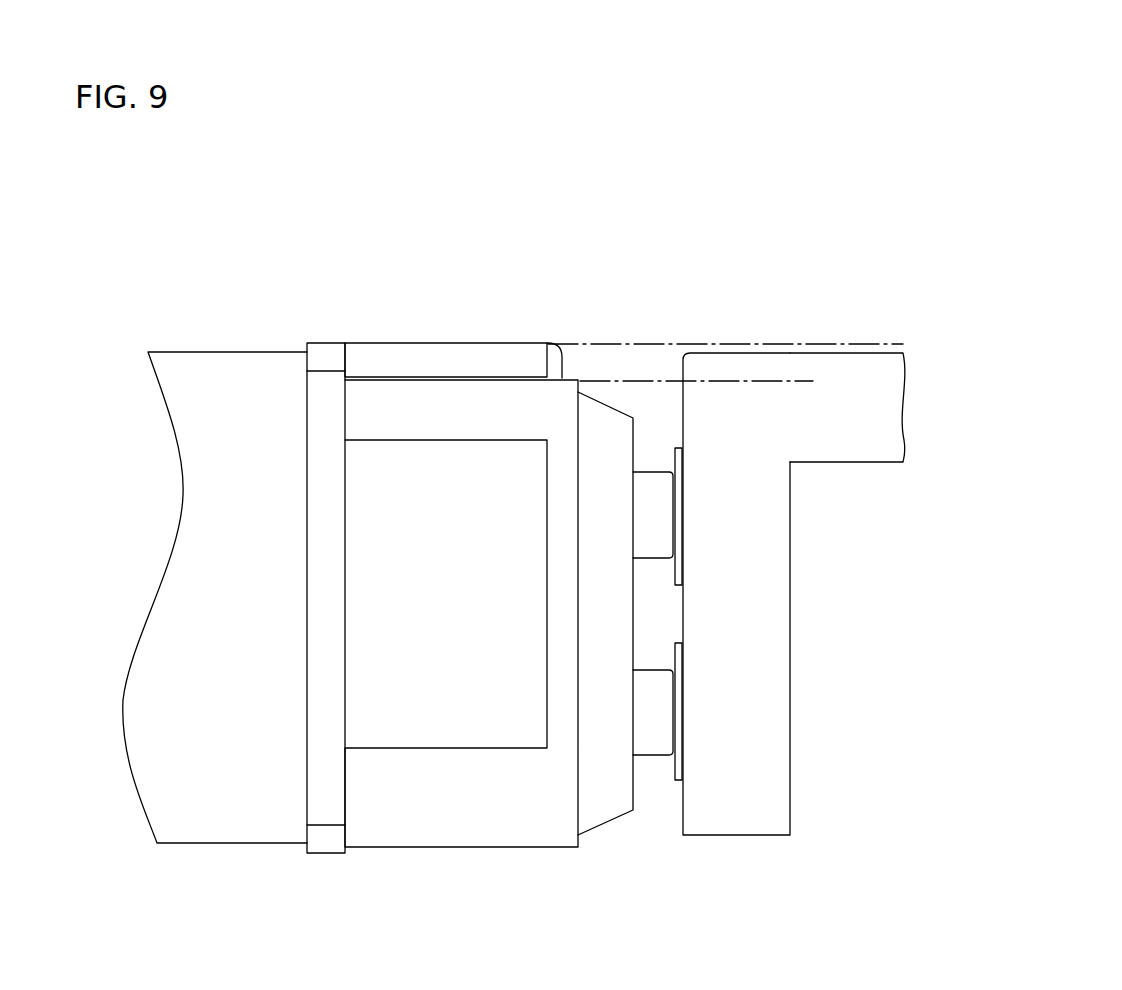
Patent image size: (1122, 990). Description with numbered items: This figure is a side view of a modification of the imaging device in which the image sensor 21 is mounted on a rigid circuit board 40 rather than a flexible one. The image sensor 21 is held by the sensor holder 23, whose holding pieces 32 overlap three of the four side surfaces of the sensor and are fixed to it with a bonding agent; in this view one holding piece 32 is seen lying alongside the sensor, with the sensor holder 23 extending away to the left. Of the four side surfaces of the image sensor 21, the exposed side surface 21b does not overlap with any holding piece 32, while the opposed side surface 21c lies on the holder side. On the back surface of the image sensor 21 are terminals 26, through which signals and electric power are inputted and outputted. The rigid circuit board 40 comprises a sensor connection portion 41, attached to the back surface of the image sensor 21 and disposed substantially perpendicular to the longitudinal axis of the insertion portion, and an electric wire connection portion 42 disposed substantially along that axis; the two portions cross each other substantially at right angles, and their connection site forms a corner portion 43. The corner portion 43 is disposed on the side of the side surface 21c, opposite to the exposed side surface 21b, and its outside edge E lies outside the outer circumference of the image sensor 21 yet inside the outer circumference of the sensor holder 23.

The sensor holder 23 is at (233, 355).
The holding piece 32 is at (407, 343).
The image sensor 21 is at (458, 860).
The exposed side surface 21b is at (533, 847).
The side surface 21c is at (563, 360).
The terminal 26 is at (667, 525).
The rigid circuit board 40 is at (752, 242).
The sensor connection portion 41 is at (713, 457).
The electric wire connection portion 42 is at (855, 392).
The corner portion 43 is at (725, 395).
The outside edge E is at (682, 382).